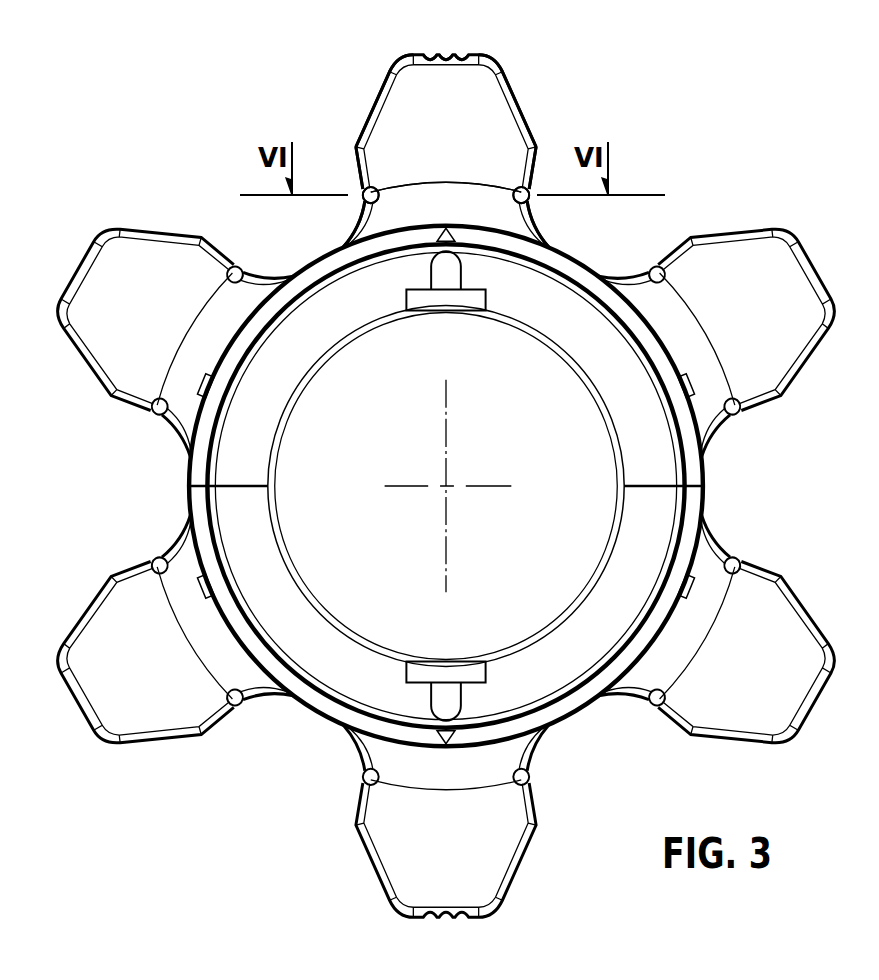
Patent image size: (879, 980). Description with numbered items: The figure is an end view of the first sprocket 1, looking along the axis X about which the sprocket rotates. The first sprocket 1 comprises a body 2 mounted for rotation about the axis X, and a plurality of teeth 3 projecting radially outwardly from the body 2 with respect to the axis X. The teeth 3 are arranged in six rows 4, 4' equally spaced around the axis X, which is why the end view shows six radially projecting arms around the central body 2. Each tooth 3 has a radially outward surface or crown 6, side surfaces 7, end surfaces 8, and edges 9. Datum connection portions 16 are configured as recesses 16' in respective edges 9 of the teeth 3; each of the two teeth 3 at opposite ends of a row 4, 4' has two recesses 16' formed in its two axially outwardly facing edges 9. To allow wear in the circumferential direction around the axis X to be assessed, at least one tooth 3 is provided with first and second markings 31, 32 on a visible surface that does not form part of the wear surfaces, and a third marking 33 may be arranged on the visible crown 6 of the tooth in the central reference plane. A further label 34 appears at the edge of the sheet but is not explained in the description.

The first sprocket 1 is at (446, 492).
The body 2 is at (705, 470).
The teeth 3 is at (510, 88).
The rows 4 is at (446, 486).
The rows 4' is at (478, 494).
The crown 6 is at (178, 978).
The side surfaces 7 is at (146, 681).
The end surfaces 8 is at (106, 562).
The edges 9 is at (358, 165).
The datum connection portions 16 is at (312, 489).
The recess 16' is at (579, 482).
The first marking 31 is at (426, 53).
The second marking 32 is at (466, 54).
The third marking 33 is at (456, 53).
The element 34 is at (98, 976).
The axis X is at (452, 483).